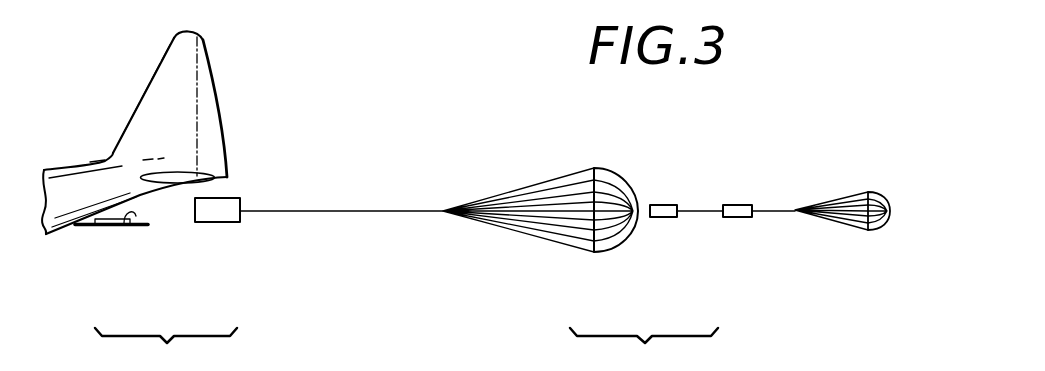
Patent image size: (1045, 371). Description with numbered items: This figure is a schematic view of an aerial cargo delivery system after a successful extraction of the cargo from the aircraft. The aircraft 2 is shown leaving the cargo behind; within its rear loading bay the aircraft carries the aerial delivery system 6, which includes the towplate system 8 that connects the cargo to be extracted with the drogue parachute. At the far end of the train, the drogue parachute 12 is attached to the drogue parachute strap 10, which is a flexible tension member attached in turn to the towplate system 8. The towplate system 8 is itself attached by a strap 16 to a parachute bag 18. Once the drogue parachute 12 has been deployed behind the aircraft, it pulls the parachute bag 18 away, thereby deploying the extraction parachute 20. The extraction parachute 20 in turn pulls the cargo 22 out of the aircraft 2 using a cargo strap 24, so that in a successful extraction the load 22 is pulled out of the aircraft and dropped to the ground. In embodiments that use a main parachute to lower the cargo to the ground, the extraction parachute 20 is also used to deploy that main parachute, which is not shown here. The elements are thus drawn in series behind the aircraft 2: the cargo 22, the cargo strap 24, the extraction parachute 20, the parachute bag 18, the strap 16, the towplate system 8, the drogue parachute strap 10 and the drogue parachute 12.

The aircraft 2 is at (73, 168).
The aerial delivery system 6 is at (133, 210).
The towplate system 8 is at (737, 205).
The drogue parachute strap 10 is at (777, 211).
The drogue parachute 12 is at (876, 190).
The strap 16 is at (700, 211).
The parachute bag 18 is at (660, 205).
The extraction parachute 20 is at (618, 247).
The cargo 22 is at (220, 222).
The cargo strap 24 is at (337, 211).